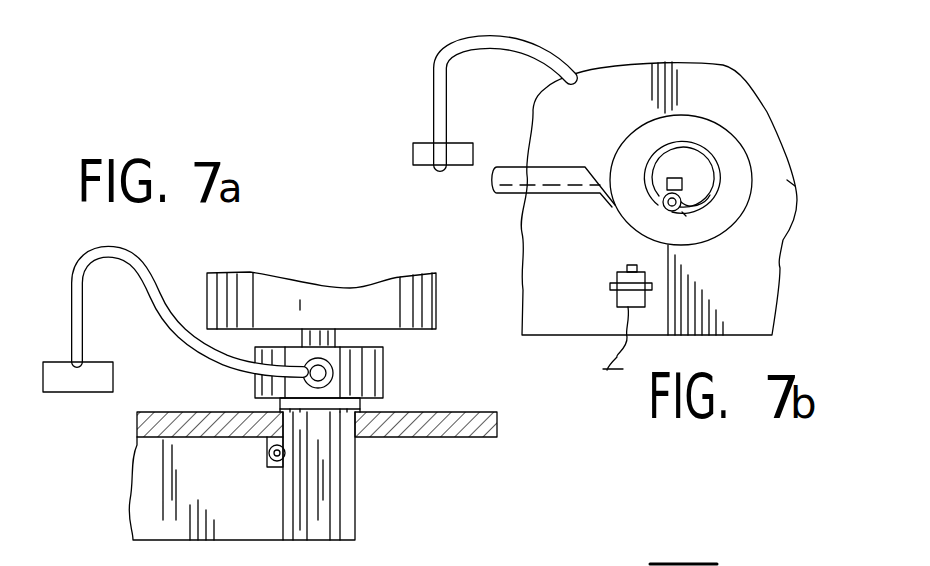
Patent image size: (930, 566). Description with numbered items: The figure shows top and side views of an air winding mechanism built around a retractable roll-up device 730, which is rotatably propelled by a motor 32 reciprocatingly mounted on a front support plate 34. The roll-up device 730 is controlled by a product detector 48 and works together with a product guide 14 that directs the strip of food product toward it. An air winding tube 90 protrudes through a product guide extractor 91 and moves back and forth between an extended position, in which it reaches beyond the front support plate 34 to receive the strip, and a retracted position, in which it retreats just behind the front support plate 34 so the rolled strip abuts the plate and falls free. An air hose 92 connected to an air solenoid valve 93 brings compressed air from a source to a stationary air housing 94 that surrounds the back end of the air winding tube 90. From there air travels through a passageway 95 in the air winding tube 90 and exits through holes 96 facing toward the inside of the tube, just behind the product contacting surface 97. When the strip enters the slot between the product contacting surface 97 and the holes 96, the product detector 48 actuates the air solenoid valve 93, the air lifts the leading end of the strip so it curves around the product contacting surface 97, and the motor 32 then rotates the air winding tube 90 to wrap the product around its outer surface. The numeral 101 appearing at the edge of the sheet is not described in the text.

In FIG. 7a, the product guide 14 is at (150, 514).
In FIG. 7b, the product guide 14 is at (508, 178).
In FIG. 7a, the motor 32 is at (397, 281).
In FIG. 7a, the front support plate 34 is at (452, 414).
In FIG. 7b, the front support plate 34 is at (787, 183).
In FIG. 7a, the product detector 48 is at (268, 455).
In FIG. 7b, the product detector 48 is at (617, 297).
In FIG. 7a, the air winding tube 90 is at (345, 512).
In FIG. 7b, the air winding tube 90 is at (698, 143).
In FIG. 7a, the product guide extractor 91 is at (382, 414).
In FIG. 7b, the product guide extractor 91 is at (733, 143).
In FIG. 7a, the air hose 92 is at (152, 272).
In FIG. 7b, the air hose 92 is at (543, 50).
In FIG. 7a, the air solenoid valve 93 is at (84, 380).
In FIG. 7b, the air solenoid valve 93 is at (458, 165).
In FIG. 7a, the stationary air housing 94 is at (385, 347).
In FIG. 7b, the passageway 95 is at (690, 240).
In FIG. 7b, the holes 96 is at (684, 202).
In FIG. 7b, the product contacting surface 97 is at (650, 160).
In FIG. 7a, the retractable roll-up device 730 is at (403, 472).
In FIG. 7b, the retractable roll-up device 730 is at (793, 262).
In FIG. 7b, the base 101 is at (727, 565).